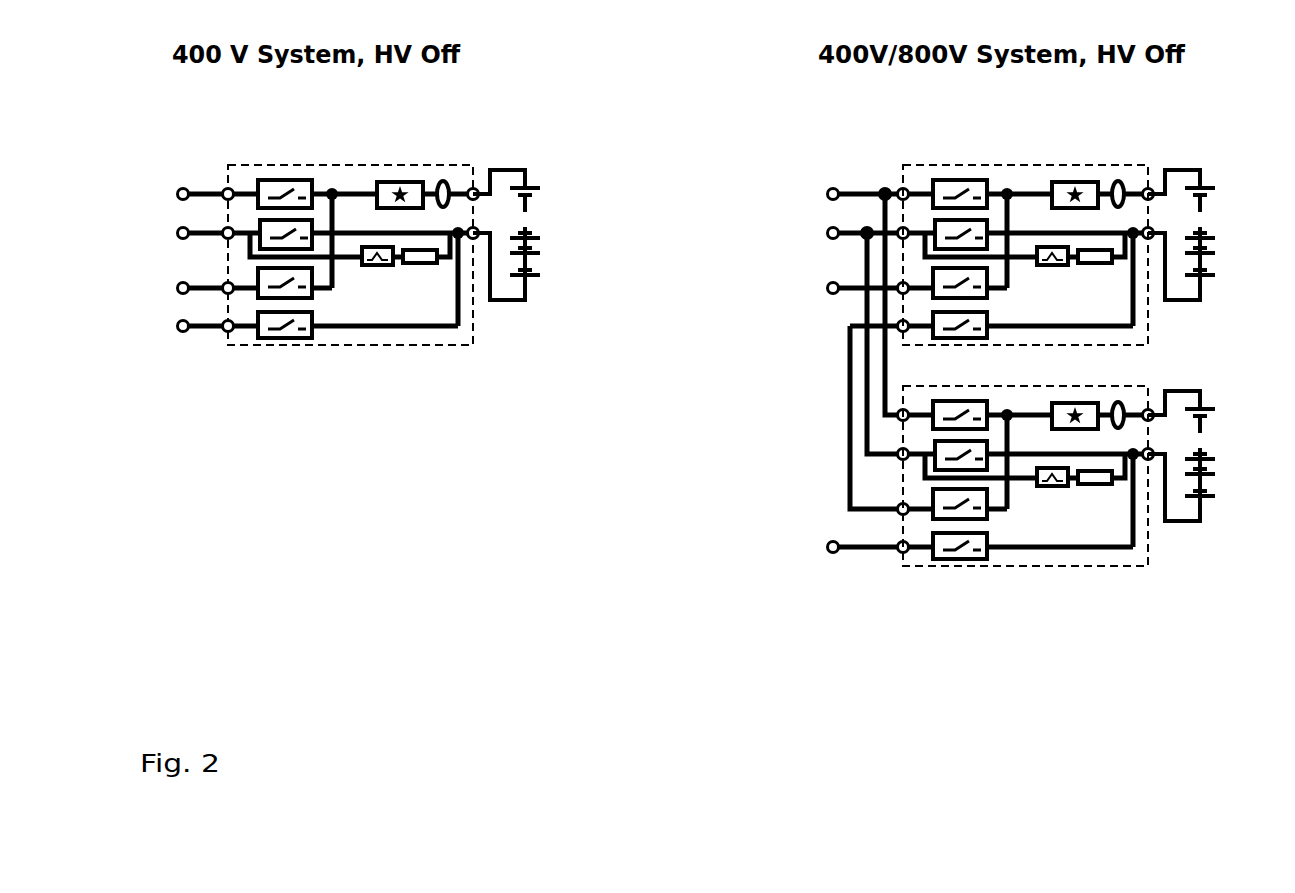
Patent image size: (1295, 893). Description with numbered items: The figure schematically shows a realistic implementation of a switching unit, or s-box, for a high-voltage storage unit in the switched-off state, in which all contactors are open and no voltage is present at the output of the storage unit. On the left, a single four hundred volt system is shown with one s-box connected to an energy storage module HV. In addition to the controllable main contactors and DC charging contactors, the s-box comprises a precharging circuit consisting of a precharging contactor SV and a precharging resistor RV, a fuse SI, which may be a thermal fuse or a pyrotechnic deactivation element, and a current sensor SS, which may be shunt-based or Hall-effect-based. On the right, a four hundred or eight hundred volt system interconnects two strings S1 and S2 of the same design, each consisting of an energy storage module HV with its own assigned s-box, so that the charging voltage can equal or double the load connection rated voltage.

The fuse SI is at (370, 177).
The current sensor SS is at (441, 176).
The precharging contactor SV is at (378, 268).
The precharging resistor RV is at (422, 266).
The energy storage module HV is at (844, 318).
The first string S1 is at (1083, 255).
The second string S2 is at (1082, 476).